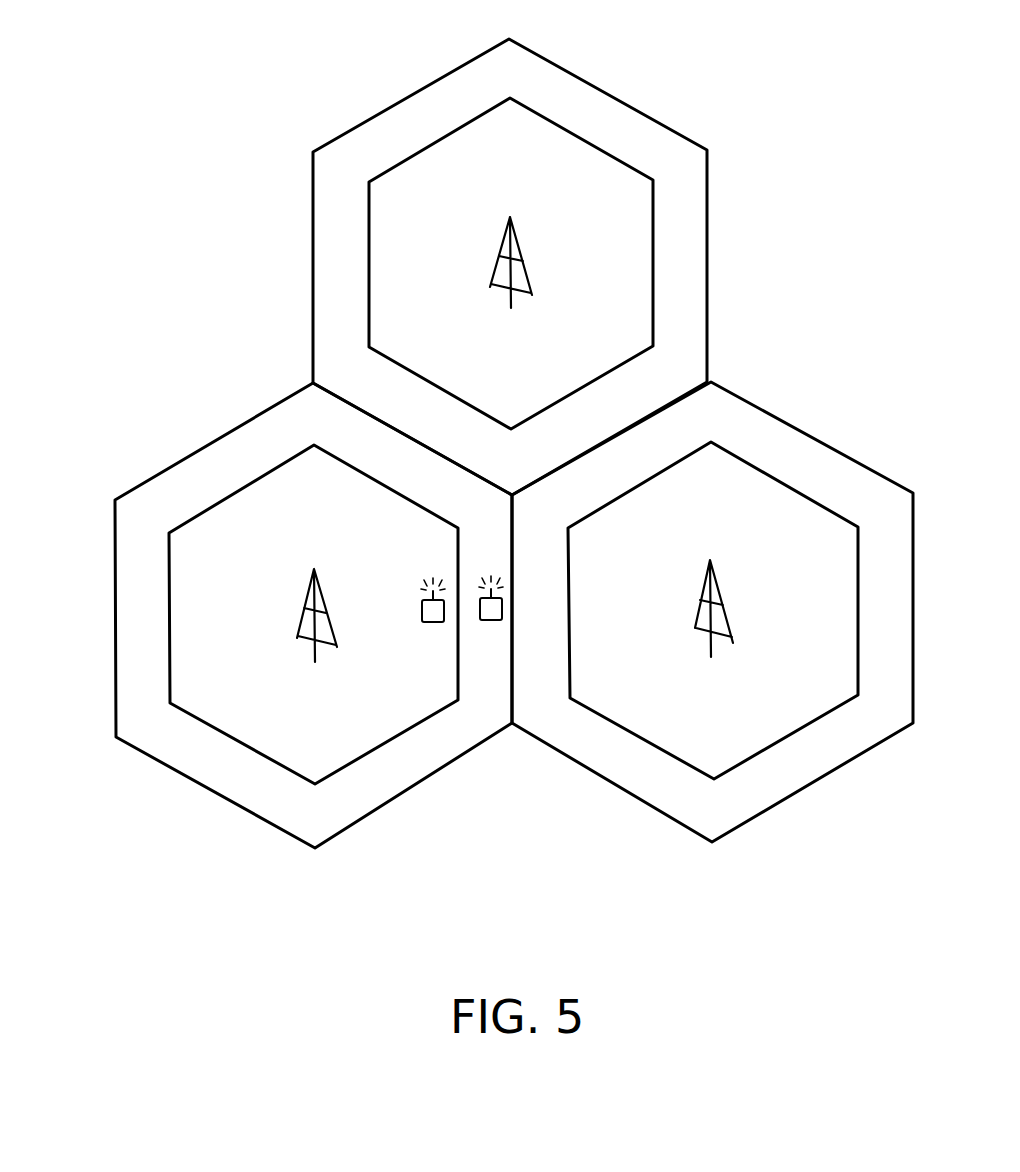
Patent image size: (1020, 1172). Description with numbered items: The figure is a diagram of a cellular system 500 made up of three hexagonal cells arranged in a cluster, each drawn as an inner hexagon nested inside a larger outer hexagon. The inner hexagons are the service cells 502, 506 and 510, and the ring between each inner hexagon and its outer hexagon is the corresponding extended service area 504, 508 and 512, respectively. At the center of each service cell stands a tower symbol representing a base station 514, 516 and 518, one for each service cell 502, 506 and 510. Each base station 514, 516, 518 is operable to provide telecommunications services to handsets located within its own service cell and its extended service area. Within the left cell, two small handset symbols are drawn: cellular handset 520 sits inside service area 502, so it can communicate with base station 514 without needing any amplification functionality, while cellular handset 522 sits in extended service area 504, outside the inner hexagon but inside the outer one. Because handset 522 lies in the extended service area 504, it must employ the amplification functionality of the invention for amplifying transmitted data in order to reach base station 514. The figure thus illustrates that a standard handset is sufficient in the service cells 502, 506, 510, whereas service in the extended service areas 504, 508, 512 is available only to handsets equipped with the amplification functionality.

The cellular system 500 is at (168, 809).
The service cell 502 is at (395, 719).
The extended service area 504 is at (455, 762).
The service cell 506 is at (611, 357).
The extended service area 508 is at (638, 414).
The service cell 510 is at (800, 719).
The extended service area 512 is at (848, 756).
The base station 514 is at (296, 640).
The base station 516 is at (490, 288).
The base station 518 is at (692, 639).
The cellular handset 520 is at (428, 622).
The cellular handset 522 is at (490, 620).